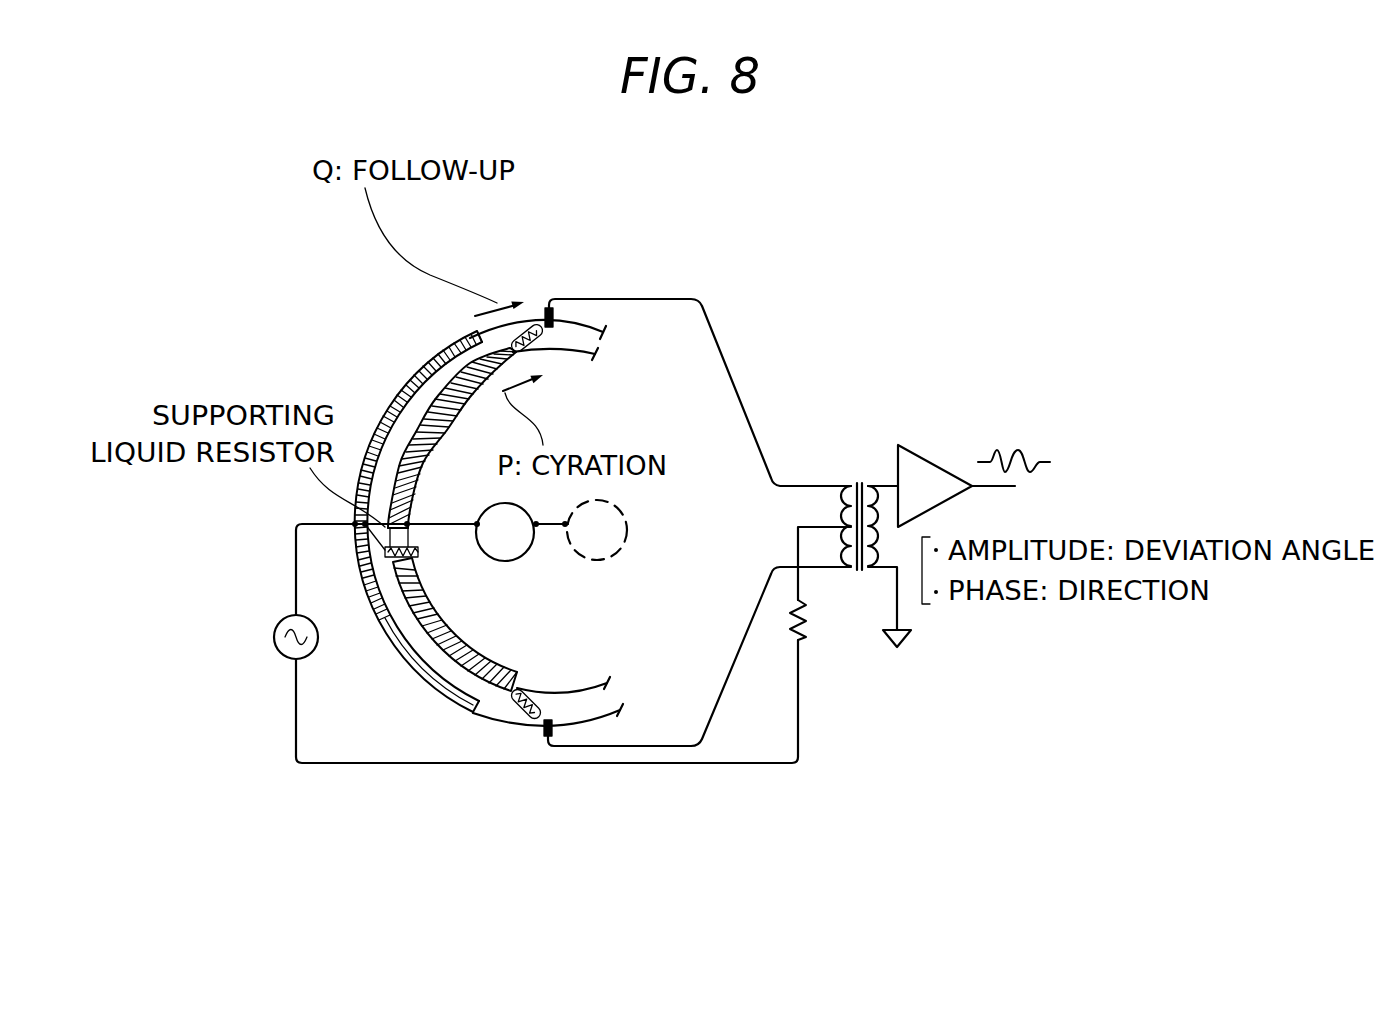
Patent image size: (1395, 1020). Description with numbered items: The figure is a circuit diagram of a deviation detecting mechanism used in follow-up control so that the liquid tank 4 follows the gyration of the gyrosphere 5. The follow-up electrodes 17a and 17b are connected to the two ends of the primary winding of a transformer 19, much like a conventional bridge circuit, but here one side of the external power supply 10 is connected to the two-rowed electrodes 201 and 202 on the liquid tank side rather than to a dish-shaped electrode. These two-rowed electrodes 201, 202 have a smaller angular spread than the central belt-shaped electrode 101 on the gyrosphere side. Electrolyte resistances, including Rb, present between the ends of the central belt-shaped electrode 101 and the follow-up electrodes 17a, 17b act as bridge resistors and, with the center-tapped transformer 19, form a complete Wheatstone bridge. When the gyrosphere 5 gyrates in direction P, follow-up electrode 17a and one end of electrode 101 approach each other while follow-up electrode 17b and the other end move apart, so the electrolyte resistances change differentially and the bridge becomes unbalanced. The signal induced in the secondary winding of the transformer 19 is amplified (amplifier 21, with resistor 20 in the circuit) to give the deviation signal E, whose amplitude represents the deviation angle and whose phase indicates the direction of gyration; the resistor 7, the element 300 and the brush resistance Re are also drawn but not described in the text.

The two-rowed electrode 201 is at (402, 388).
The two-rowed electrode 202 is at (410, 512).
The central belt-shaped electrode 101 is at (425, 590).
The liquid tank 4 is at (487, 716).
The gyrosphere 5 is at (574, 354).
The resistor R 7 is at (482, 512).
The external power supply 10 is at (275, 637).
The follow-up electrode 17a is at (553, 315).
The follow-up electrode 17b is at (553, 732).
The transformer 19 is at (857, 482).
The resistor 20 is at (812, 628).
The amplifier 21 is at (928, 446).
The gyration element 300 is at (630, 527).
The brush resistor Re is at (532, 330).
The electrolyte resistor Rb is at (520, 722).
The deviation signal E is at (1007, 449).